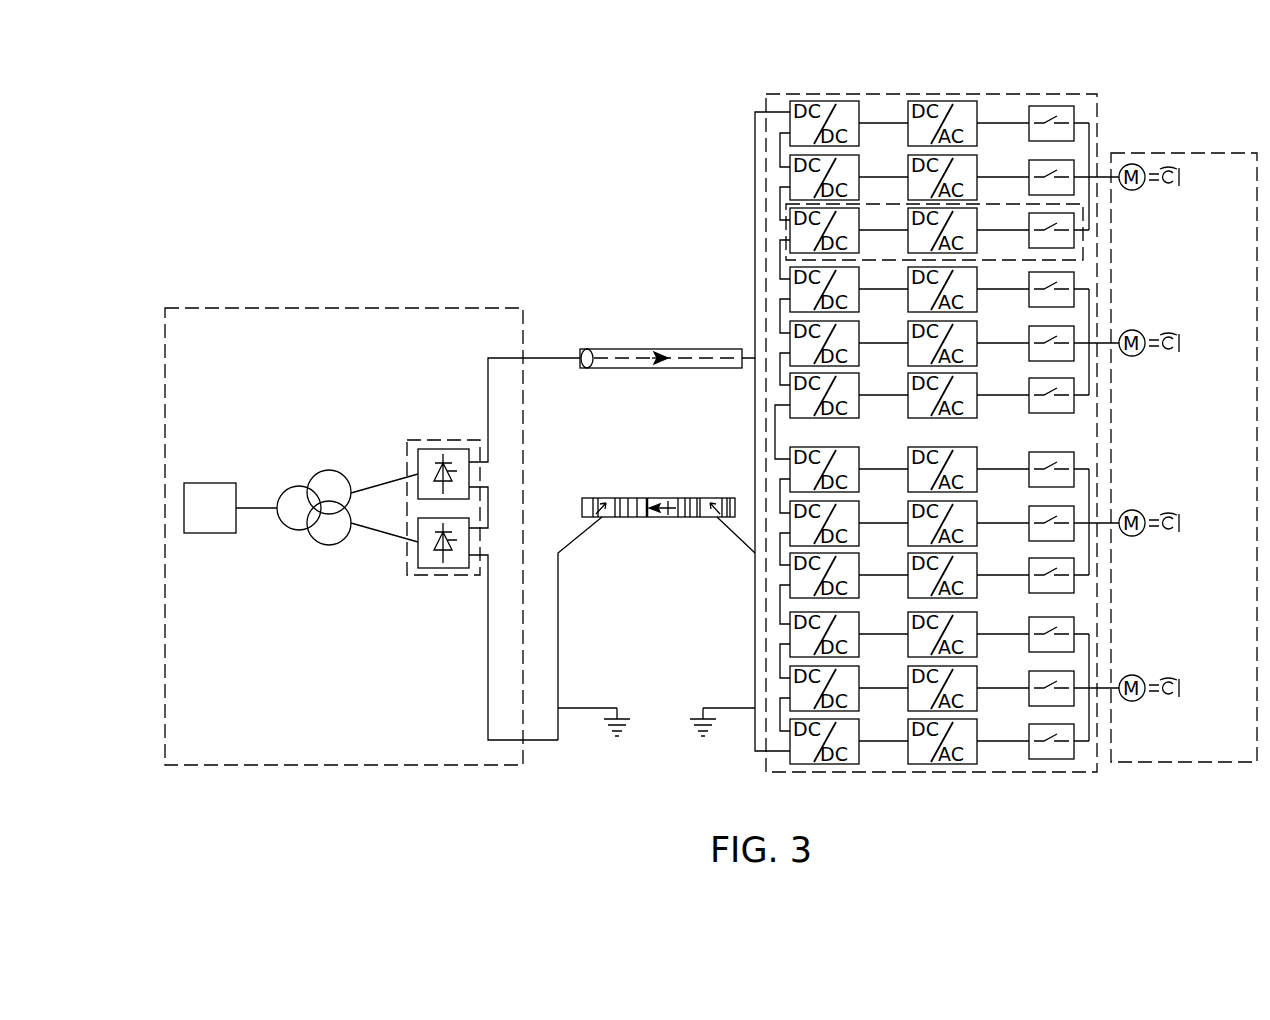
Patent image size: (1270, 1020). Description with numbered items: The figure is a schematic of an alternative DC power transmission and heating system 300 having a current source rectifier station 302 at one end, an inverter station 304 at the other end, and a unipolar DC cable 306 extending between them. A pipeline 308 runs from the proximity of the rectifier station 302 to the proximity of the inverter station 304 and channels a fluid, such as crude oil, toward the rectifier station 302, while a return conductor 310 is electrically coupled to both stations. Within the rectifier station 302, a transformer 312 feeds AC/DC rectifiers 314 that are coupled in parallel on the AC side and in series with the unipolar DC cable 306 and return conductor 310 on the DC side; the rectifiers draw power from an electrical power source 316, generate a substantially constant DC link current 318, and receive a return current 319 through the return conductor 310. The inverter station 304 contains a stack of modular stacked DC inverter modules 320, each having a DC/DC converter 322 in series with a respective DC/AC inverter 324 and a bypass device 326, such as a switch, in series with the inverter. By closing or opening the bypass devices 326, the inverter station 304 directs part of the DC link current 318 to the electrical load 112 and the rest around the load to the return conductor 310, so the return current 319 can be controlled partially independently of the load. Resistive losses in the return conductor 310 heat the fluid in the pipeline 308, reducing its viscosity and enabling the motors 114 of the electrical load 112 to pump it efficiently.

The DC power transmission and heating system 300 is at (1123, 112).
The rectifier station 302 is at (432, 308).
The inverter station 304 is at (765, 95).
The unipolar DC cable 306 is at (659, 355).
The pipeline 308 is at (620, 517).
The return conductor 310 is at (697, 517).
The transformer 312 is at (328, 470).
The AC/DC rectifiers 314 is at (425, 440).
The electrical power source 316 is at (217, 483).
The DC link current 318 is at (662, 368).
The return current 319 is at (663, 517).
The modular stacked DC inverter module 320 is at (1083, 250).
The DC/DC converter 322 is at (830, 765).
The DC/AC inverter 324 is at (948, 765).
The bypass device 326 is at (1055, 762).
The electrical load 112 is at (1213, 153).
The motors 114 is at (1138, 328).